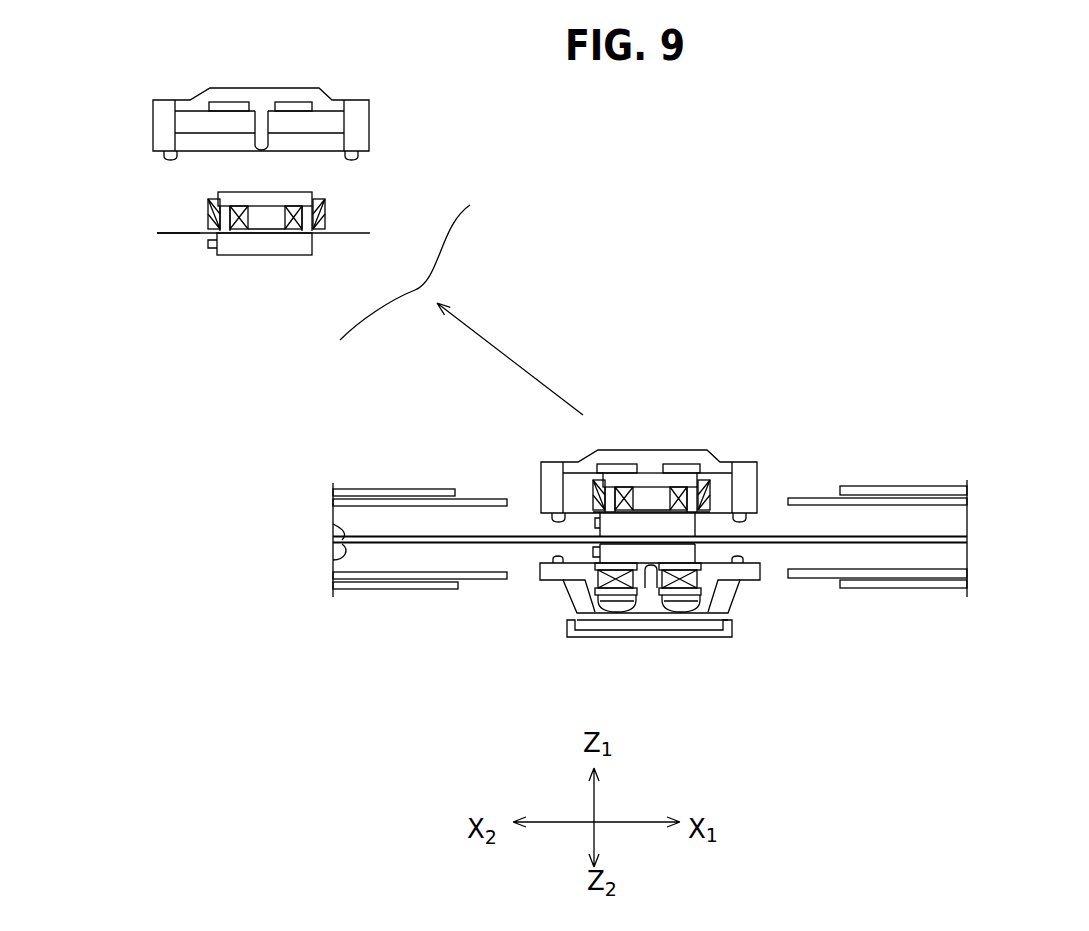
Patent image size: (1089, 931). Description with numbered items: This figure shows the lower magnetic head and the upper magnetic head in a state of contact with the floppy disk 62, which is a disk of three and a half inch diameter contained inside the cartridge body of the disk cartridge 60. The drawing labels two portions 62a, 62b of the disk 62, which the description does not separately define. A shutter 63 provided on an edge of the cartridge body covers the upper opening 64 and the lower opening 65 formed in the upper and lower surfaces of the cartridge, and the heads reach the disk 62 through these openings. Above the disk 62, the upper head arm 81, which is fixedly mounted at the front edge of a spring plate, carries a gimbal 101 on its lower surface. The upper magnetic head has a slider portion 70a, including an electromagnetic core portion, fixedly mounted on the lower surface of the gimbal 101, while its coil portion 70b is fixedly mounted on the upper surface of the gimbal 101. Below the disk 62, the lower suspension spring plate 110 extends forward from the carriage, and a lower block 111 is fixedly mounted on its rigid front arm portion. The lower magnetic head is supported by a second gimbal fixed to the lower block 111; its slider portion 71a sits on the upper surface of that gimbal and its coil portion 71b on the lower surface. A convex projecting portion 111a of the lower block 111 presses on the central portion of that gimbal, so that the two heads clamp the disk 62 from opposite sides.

The disk cartridge 60 is at (967, 571).
The floppy disk 62 is at (943, 532).
The first shaft portion 62a is at (333, 524).
The second shaft portion 62b is at (333, 560).
The shutter 63 is at (920, 485).
The upper opening 64 is at (525, 498).
The lower opening 65 is at (775, 573).
The slider portion 70a is at (688, 527).
The coil portion 70b is at (648, 470).
The slider portion 71a is at (608, 557).
The coil portion 71b is at (615, 595).
The upper head arm 81 is at (747, 462).
The gimbal 101 is at (183, 233).
The lower suspension spring plate 110 is at (735, 632).
The lower block 111 is at (698, 622).
The convex projecting portion 111a is at (645, 575).